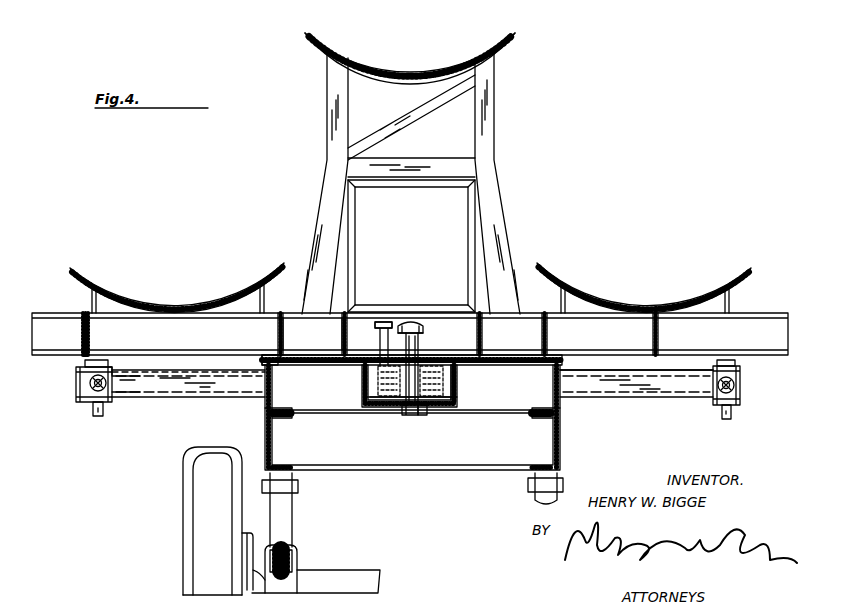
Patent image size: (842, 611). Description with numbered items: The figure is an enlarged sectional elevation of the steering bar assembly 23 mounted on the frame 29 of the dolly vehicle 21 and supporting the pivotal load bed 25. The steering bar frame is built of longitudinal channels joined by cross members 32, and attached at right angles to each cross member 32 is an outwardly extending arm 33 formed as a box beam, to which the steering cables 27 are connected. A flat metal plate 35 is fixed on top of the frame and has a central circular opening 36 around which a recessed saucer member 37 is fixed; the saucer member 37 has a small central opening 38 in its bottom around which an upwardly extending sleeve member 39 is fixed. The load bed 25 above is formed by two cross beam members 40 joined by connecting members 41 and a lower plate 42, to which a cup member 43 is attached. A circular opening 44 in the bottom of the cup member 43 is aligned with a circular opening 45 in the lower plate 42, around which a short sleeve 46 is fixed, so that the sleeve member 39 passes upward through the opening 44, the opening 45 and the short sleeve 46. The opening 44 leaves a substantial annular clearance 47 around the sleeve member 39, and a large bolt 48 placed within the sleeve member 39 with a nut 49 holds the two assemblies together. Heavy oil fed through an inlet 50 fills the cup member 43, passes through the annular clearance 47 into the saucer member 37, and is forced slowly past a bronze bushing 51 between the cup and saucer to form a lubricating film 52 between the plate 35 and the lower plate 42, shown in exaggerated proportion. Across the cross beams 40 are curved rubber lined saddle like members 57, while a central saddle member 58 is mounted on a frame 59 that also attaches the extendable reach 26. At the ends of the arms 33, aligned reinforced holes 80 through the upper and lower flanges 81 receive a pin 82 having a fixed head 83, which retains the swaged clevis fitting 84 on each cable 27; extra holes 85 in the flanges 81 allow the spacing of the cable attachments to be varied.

The dolly vehicle 21 is at (364, 417).
The steering bar assembly 23 is at (611, 407).
The load bed 25 is at (61, 307).
The extendable reach 26 is at (397, 188).
The steering cables 27 is at (90, 398).
The dolly frame 29 is at (265, 441).
The cross members 32 is at (266, 408).
The outwardly extending arm 33 is at (128, 388).
The flat metal plate 35 is at (262, 362).
The central circular opening 36 is at (362, 378).
The saucer member 37 is at (367, 400).
The central opening 38 is at (410, 415).
The sleeve member 39 is at (433, 381).
The cross beam members 40 is at (709, 348).
The connecting members 41 is at (88, 339).
The lower plate 42 is at (292, 354).
The cup member 43 is at (378, 357).
The circular opening 44 is at (397, 400).
The circular opening 45 is at (422, 347).
The short sleeve 46 is at (423, 334).
The annular clearance 47 is at (428, 406).
The bolt 48 is at (420, 414).
The nut 49 is at (413, 327).
The inlet 50 is at (372, 322).
The bronze bushing 51 is at (450, 385).
The lubricating film 52 is at (268, 356).
The saddle like members 57 is at (170, 299).
The central saddle member 58 is at (388, 66).
The frame 59 is at (488, 134).
The reinforced holes 80 is at (118, 379).
The flanges 81 is at (76, 388).
The pin 82 is at (97, 416).
The fixed head 83 is at (82, 362).
The swaged clevis fitting 84 is at (110, 368).
The extra holes 85 is at (140, 370).